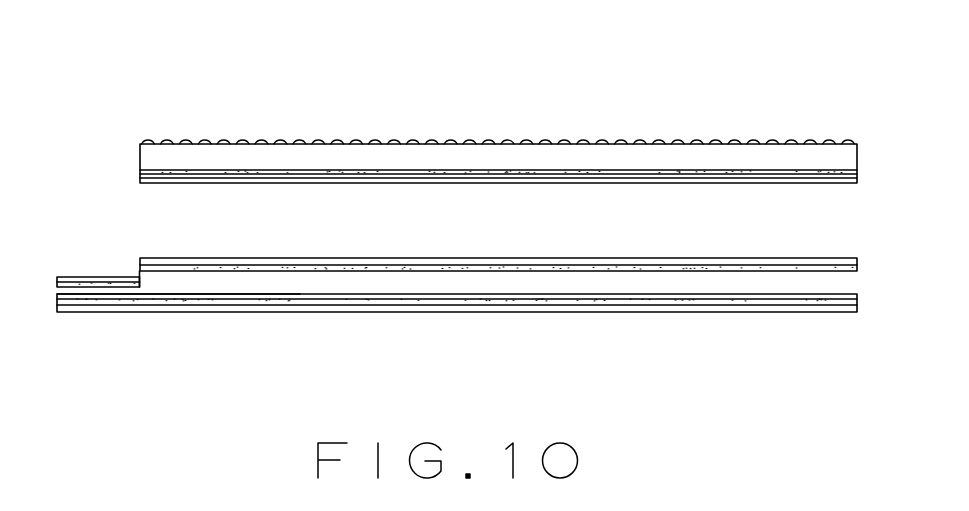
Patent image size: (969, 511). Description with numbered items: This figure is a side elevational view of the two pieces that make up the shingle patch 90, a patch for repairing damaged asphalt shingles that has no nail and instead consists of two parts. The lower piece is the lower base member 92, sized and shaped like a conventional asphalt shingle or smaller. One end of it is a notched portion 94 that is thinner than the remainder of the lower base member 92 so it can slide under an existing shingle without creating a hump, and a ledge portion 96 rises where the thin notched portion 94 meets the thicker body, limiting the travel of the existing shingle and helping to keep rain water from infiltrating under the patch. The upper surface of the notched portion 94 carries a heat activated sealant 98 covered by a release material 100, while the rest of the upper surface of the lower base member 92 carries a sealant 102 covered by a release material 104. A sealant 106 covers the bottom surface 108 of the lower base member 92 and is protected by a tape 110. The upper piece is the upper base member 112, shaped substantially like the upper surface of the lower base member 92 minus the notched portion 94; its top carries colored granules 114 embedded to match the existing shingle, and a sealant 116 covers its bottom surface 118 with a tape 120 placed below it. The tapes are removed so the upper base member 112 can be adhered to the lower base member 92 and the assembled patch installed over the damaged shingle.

The shingle patch 90 is at (100, 136).
The lower base member 92 is at (860, 287).
The notched portion 94 is at (65, 292).
The ledge portion 96 is at (138, 270).
The sealant 98 is at (72, 282).
The release material 100 is at (90, 280).
The sealant 102 is at (765, 270).
The release material 104 is at (678, 257).
The sealant 106 is at (853, 300).
The bottom surface 108 is at (812, 297).
The tape 110 is at (297, 308).
The upper base member 112 is at (686, 155).
The colored granules 114 is at (580, 140).
The sealant 116 is at (797, 172).
The bottom surface 118 is at (827, 176).
The tape 120 is at (238, 180).